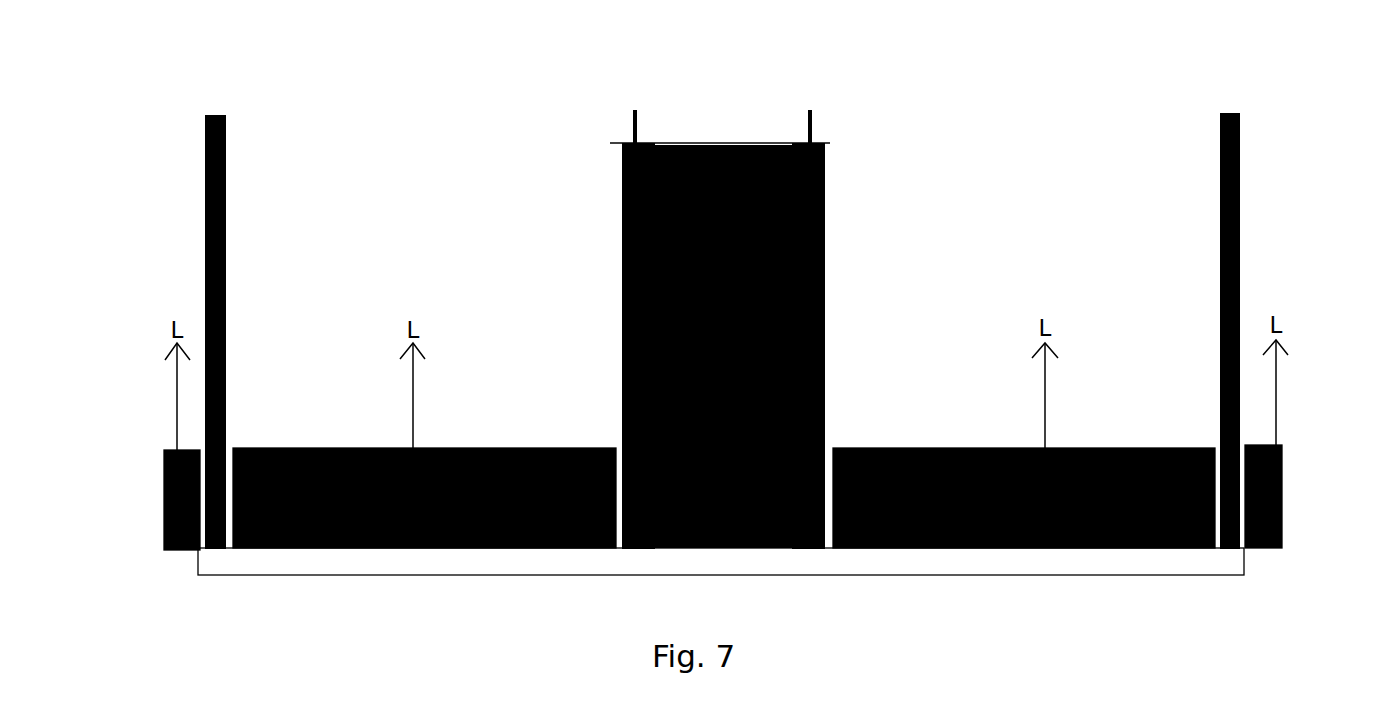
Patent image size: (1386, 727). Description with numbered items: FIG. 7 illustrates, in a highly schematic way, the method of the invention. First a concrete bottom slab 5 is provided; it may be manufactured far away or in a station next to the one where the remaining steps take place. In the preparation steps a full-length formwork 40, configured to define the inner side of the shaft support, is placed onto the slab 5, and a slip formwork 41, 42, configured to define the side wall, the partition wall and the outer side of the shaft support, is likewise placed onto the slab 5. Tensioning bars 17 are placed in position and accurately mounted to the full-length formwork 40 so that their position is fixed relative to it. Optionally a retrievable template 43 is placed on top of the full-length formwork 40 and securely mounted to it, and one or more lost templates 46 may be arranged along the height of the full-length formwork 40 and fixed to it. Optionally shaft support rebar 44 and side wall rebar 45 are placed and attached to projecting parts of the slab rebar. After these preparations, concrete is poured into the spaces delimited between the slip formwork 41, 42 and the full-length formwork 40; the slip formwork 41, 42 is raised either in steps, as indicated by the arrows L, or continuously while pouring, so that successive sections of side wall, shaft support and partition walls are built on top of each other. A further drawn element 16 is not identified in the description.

The concrete bottom slab 5 is at (1030, 569).
The first electrode 16 is at (807, 122).
The tensioning bars 17 is at (633, 323).
The full-length formwork 40 is at (793, 232).
The slip formwork 41 is at (335, 447).
The slip formwork 42 is at (164, 473).
The template 43 is at (766, 100).
The shaft support rebar 44 is at (623, 257).
The side wall rebar 45 is at (222, 165).
The lost template 46 is at (662, 338).